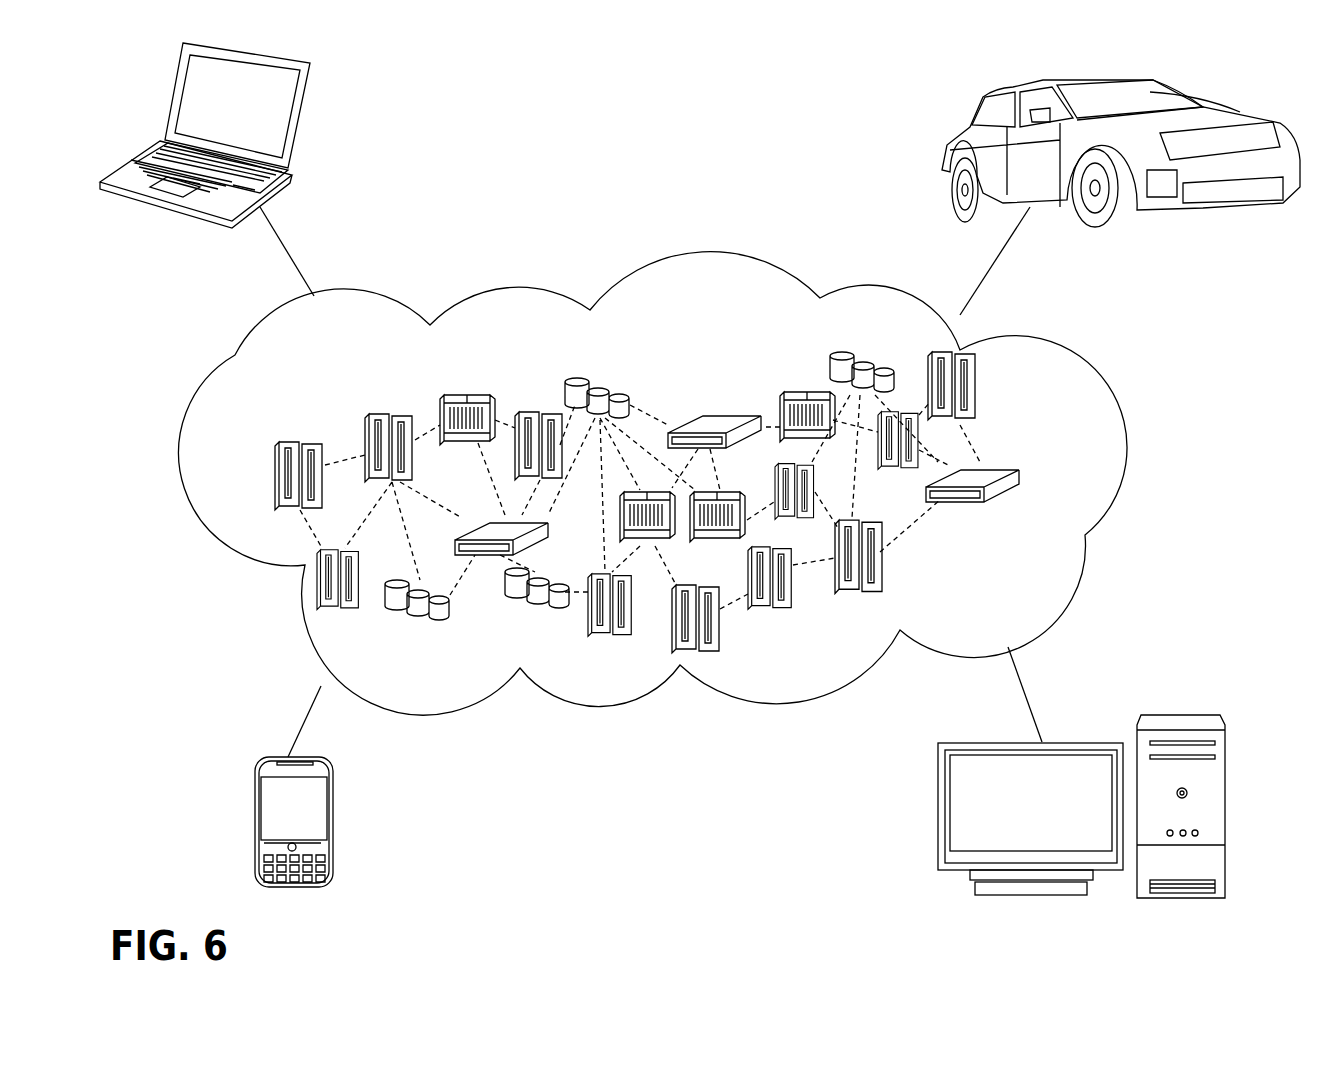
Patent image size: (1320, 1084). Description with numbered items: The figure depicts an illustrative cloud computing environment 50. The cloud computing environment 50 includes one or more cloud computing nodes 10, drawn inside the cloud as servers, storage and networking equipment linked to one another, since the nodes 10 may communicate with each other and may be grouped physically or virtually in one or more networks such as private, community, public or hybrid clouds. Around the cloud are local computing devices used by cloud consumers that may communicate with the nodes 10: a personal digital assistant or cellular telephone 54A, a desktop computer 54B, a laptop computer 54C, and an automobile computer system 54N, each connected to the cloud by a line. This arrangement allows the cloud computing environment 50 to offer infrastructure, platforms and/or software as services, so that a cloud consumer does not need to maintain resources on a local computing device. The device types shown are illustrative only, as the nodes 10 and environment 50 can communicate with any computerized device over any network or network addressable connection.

The cloud computing node 10 is at (1067, 478).
The cloud computing environment 50 is at (1093, 383).
The personal digital assistant (PDA) or cellular telephone 54A is at (253, 828).
The desktop computer 54B is at (1185, 715).
The laptop computer 54C is at (305, 120).
The automobile computer system 54N is at (952, 135).